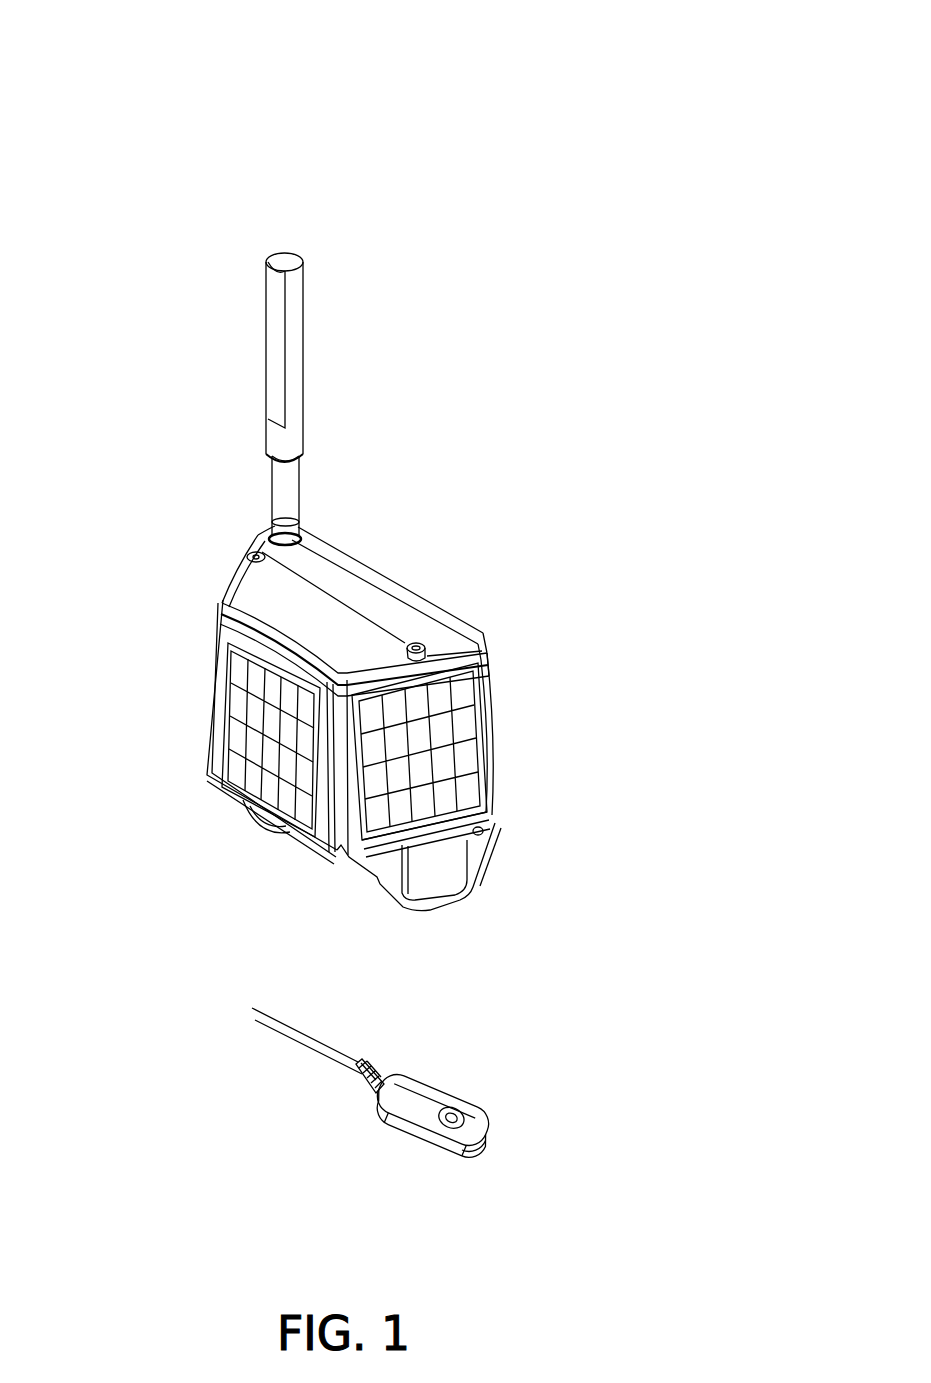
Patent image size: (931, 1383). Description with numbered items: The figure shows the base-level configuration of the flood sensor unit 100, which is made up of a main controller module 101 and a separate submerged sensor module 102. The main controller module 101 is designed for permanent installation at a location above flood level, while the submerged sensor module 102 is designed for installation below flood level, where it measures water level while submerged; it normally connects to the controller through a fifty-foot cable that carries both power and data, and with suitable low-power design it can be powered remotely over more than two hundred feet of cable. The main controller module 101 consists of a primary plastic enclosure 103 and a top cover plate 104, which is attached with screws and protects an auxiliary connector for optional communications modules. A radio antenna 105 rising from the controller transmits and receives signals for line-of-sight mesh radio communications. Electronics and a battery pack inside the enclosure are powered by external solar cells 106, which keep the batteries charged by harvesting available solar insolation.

The flood sensor unit 100 is at (488, 175).
The main controller module 101 is at (225, 565).
The submerged sensor module 102 is at (402, 1143).
The primary plastic enclosure 103 is at (502, 745).
The top cover plate 104 is at (350, 575).
The radio antenna 105 is at (317, 348).
The external solar cells 106 is at (223, 728).